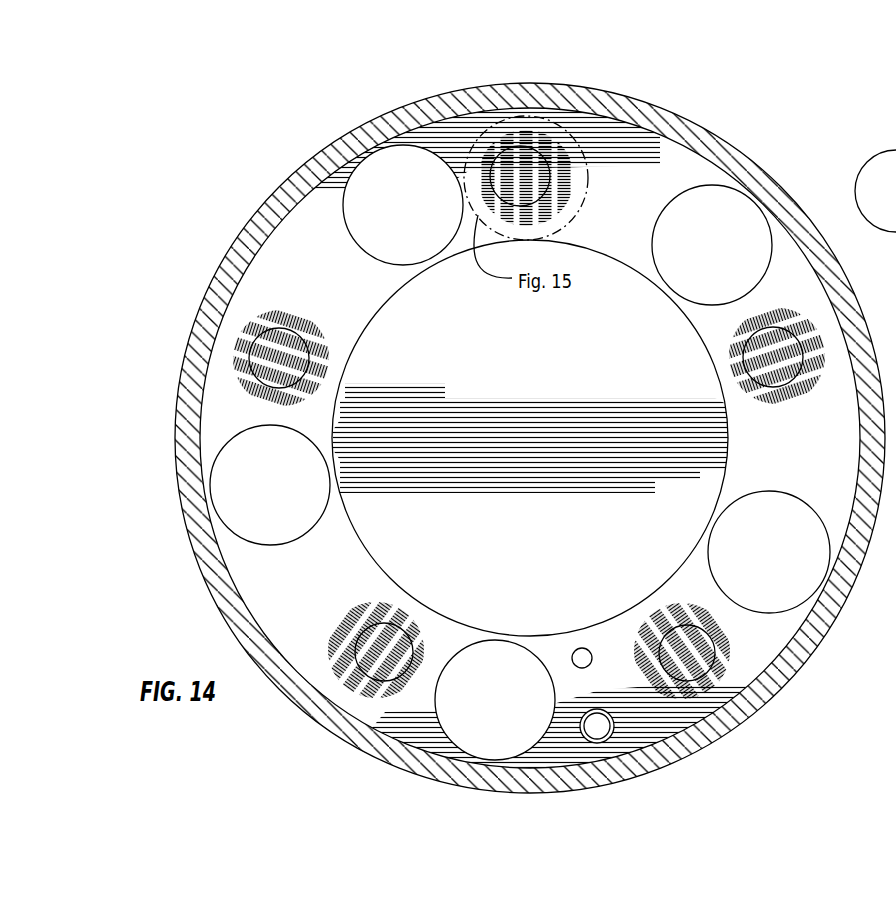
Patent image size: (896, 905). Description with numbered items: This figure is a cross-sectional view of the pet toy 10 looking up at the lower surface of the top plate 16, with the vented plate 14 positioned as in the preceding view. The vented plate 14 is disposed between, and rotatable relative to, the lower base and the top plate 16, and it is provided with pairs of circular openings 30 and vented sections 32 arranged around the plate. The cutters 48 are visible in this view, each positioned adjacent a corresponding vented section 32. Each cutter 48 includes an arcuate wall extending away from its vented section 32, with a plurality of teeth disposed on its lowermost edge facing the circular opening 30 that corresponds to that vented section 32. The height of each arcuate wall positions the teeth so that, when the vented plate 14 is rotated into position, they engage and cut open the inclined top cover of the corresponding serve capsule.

The pet toy 10 is at (246, 157).
The vented plate 14 is at (268, 253).
The top plate 16 is at (255, 223).
The circular opening 30 is at (368, 253).
The vented section 32 is at (545, 150).
The cutter 48 is at (495, 162).